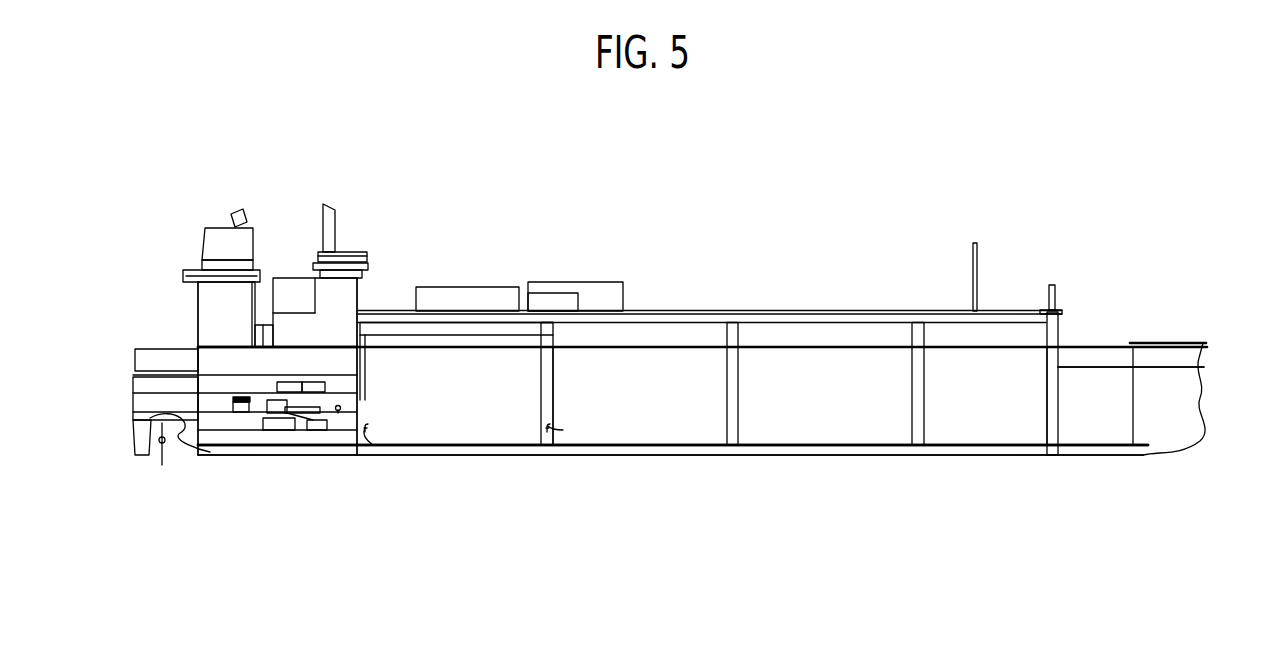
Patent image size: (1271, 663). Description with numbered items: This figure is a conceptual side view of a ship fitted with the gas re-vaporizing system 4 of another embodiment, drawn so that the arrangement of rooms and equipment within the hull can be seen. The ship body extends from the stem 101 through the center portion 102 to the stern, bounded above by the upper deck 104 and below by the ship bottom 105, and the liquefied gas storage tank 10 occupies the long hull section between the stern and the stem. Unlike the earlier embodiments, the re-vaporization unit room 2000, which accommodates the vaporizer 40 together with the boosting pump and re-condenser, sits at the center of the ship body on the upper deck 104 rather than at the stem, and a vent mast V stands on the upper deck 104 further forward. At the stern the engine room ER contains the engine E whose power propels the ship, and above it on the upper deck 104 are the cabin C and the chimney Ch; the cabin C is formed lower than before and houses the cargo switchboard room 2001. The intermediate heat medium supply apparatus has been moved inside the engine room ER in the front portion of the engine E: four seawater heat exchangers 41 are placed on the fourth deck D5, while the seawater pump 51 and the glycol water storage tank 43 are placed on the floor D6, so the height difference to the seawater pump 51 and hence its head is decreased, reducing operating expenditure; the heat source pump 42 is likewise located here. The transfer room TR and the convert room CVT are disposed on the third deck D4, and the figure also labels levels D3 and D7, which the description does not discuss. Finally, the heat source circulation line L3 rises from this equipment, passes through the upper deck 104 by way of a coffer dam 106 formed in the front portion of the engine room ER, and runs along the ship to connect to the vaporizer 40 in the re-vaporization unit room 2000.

The gas re-vaporizing system 4 is at (1148, 160).
The liquefied gas storage tank 10 is at (778, 418).
The vaporizer 40 is at (558, 300).
The seawater heat exchanger 41 is at (257, 413).
The heat source pump 42 is at (334, 430).
The glycol water storage tank 43 is at (283, 415).
The seawater pump 51 is at (310, 430).
The stem 101 is at (1200, 399).
The center portion 102 is at (851, 455).
The upper deck 104 is at (211, 349).
The ship bottom 105 is at (641, 452).
The coffer dam 106 is at (373, 445).
The re-vaporization unit room 2000 is at (608, 290).
The cargo switchboard room 2001 is at (296, 287).
The cabin C is at (345, 275).
The chimney Ch is at (218, 307).
The engine room ER is at (221, 364).
The deck D3 is at (205, 358).
The third deck D4 is at (203, 378).
The fourth deck D5 is at (203, 400).
The floor D6 is at (190, 455).
The deck D7 is at (240, 456).
The engine E is at (234, 412).
The transfer room TR is at (287, 382).
The convert room CVT is at (325, 382).
The heat source circulation line L3 is at (370, 398).
The vent mast V is at (978, 251).